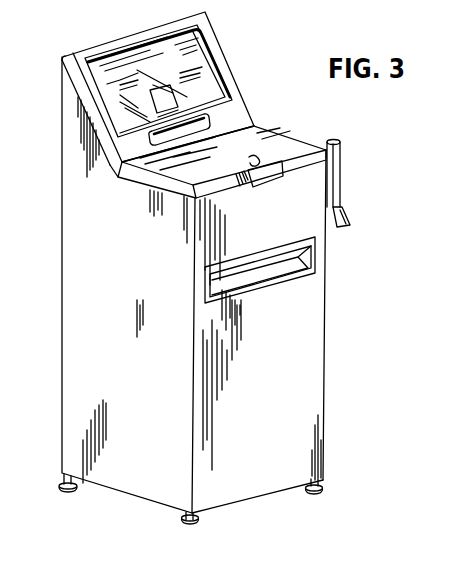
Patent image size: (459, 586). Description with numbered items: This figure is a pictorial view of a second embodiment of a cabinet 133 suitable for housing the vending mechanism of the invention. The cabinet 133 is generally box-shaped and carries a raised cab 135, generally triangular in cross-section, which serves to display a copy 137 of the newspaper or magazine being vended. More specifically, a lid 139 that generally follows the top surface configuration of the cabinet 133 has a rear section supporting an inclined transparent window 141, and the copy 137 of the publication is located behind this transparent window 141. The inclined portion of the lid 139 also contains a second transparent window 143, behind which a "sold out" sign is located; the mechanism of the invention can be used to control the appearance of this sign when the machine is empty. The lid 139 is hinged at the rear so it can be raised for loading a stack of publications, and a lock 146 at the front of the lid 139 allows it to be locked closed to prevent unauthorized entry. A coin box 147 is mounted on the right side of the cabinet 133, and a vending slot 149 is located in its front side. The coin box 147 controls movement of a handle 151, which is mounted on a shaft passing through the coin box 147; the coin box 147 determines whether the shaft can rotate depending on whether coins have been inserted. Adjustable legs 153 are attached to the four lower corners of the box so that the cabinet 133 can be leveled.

The cabinet 133 is at (320, 328).
The cab 135 is at (227, 63).
The copy of the newspaper/magazine 137 is at (193, 52).
The lid 139 is at (288, 143).
The transparent window 141 is at (220, 90).
The second transparent window 143 is at (201, 125).
The lock 146 is at (251, 158).
The coin box 147 is at (332, 262).
The vending slot 149 is at (263, 280).
The handle 151 is at (341, 150).
The adjustable legs 153 is at (74, 492).